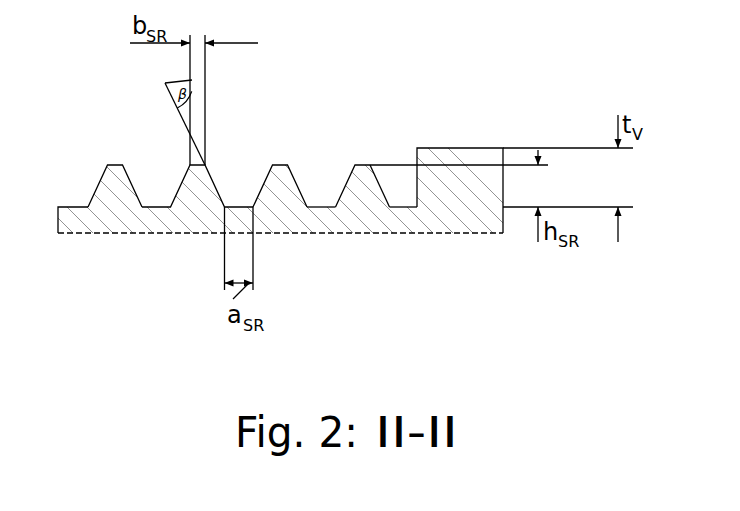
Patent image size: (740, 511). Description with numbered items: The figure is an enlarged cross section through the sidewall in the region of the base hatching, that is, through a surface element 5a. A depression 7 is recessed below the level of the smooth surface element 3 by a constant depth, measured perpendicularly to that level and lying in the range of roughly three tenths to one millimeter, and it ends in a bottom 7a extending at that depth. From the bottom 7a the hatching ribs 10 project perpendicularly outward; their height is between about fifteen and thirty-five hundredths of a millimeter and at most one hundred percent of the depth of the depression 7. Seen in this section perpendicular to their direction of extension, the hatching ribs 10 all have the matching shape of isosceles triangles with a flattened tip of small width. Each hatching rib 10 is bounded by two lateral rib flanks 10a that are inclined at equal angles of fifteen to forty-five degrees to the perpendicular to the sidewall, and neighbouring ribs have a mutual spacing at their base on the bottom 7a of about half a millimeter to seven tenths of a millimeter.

The smooth surface element 3 is at (449, 148).
The surface element 5a is at (281, 137).
The depression 7 is at (130, 137).
The bottom 7a is at (320, 208).
The hatching rib 10 is at (357, 185).
The rib flank 10a is at (391, 206).